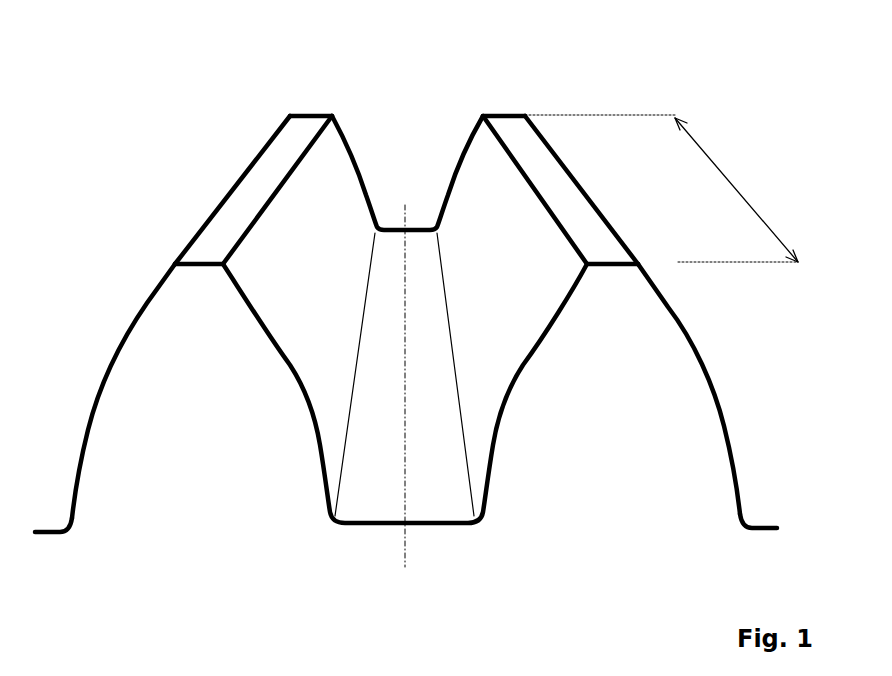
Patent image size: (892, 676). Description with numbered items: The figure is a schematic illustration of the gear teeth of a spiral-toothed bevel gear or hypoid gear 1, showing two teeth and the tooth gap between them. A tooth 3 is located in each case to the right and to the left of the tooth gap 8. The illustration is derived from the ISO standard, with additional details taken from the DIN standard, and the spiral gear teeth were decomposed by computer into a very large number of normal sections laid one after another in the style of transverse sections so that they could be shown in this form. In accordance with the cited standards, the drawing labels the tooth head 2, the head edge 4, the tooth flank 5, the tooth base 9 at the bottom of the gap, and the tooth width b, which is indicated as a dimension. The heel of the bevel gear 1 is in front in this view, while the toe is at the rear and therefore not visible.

The bevel gear 1 is at (277, 47).
The tooth head 2 is at (285, 157).
The tooth 3 is at (145, 302).
The head edge 4 is at (254, 215).
The tooth flank 5 is at (343, 372).
The tooth gap 8 is at (433, 130).
The tooth base 9 is at (447, 523).
The tooth width b is at (661, 188).